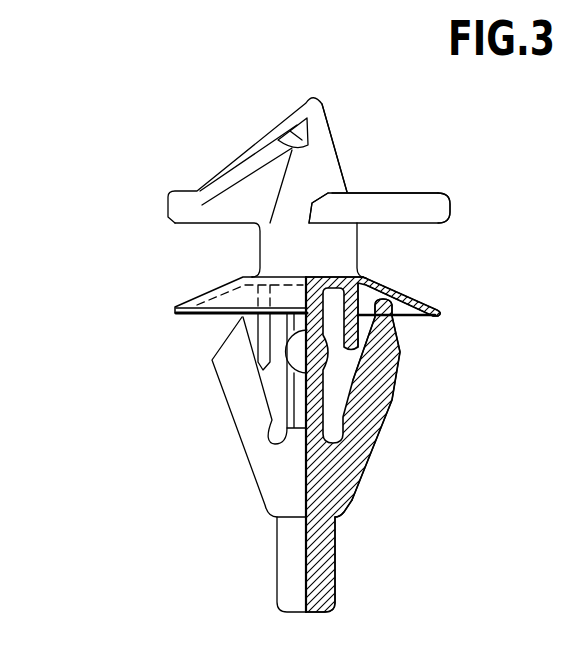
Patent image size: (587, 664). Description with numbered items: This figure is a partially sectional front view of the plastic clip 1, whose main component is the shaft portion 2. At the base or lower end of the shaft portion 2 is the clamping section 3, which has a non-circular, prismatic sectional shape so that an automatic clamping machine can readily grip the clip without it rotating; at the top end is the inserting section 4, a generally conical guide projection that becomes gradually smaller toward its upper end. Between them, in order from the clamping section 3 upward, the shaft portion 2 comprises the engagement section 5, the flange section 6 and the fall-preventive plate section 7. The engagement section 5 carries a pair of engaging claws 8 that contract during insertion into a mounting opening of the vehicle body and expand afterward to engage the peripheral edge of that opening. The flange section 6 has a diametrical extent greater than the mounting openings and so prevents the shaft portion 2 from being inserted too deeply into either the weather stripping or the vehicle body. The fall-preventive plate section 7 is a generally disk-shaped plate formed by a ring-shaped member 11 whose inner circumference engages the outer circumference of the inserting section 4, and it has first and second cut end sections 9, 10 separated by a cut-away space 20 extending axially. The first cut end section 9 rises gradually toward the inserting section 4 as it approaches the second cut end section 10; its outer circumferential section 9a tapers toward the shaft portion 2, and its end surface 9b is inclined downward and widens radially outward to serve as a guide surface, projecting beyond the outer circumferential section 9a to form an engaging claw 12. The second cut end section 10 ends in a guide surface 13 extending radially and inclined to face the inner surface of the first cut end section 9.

The plastic clip 1 is at (118, 232).
The shaft portion 2 is at (347, 520).
The clamping section 3 is at (298, 570).
The inserting section 4 is at (323, 152).
The engagement section 5 is at (393, 402).
The flange section 6 is at (435, 305).
The fall-preventive plate section 7 is at (455, 210).
The engaging claws 8 is at (222, 391).
The first cut end section 9 is at (220, 172).
The outer circumferential section 9a is at (297, 125).
The end surface 9b is at (298, 127).
The second cut end section 10 is at (360, 191).
The ring-shaped member 11 is at (432, 205).
The engaging claw 12 is at (312, 138).
The guide surface 13 is at (320, 190).
The cut-away space 20 is at (301, 189).